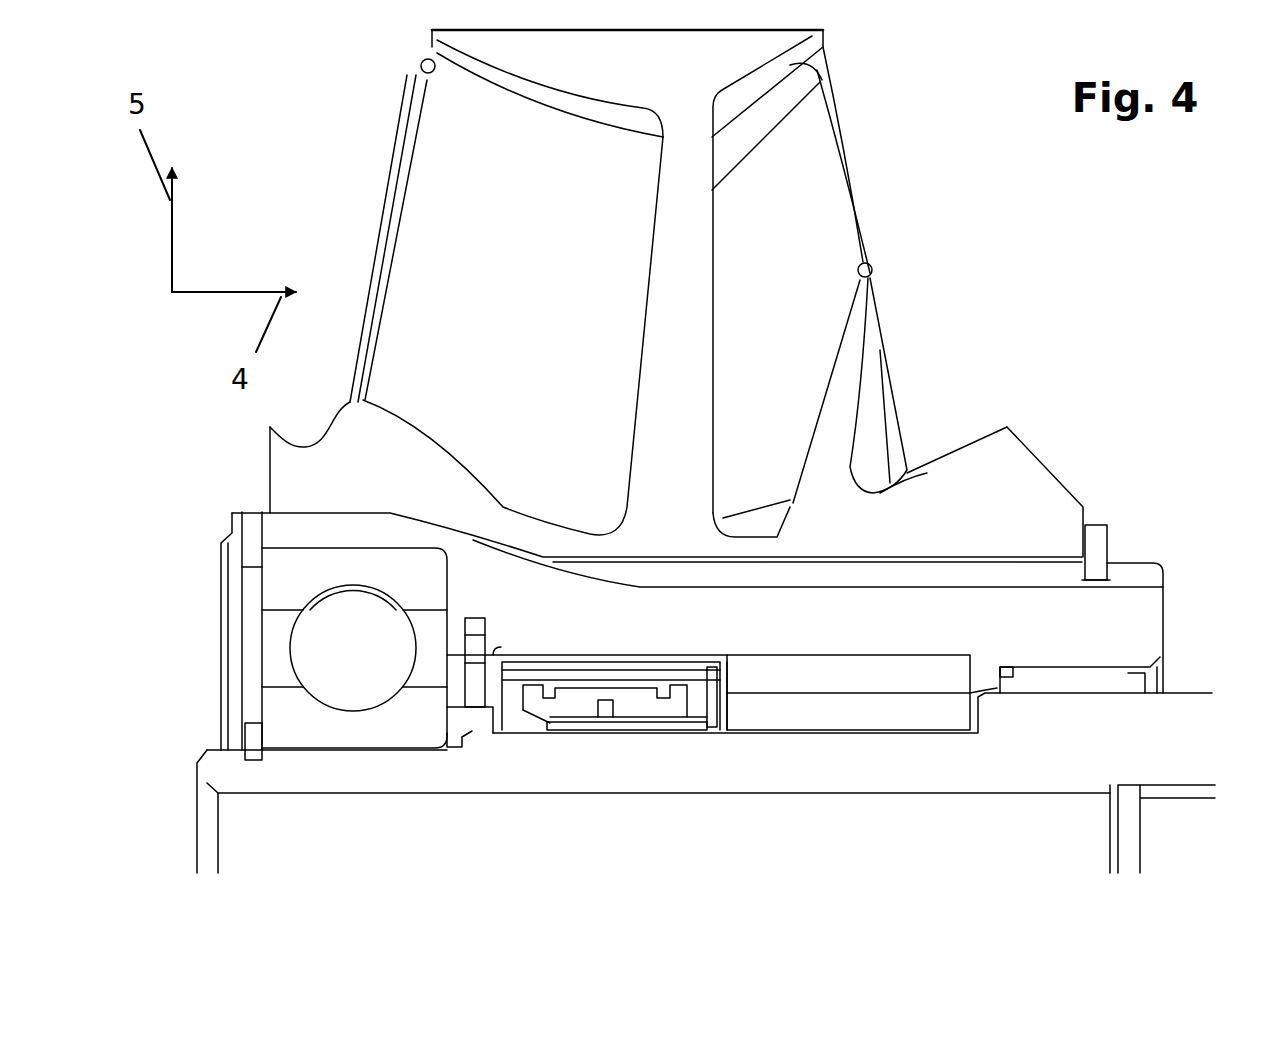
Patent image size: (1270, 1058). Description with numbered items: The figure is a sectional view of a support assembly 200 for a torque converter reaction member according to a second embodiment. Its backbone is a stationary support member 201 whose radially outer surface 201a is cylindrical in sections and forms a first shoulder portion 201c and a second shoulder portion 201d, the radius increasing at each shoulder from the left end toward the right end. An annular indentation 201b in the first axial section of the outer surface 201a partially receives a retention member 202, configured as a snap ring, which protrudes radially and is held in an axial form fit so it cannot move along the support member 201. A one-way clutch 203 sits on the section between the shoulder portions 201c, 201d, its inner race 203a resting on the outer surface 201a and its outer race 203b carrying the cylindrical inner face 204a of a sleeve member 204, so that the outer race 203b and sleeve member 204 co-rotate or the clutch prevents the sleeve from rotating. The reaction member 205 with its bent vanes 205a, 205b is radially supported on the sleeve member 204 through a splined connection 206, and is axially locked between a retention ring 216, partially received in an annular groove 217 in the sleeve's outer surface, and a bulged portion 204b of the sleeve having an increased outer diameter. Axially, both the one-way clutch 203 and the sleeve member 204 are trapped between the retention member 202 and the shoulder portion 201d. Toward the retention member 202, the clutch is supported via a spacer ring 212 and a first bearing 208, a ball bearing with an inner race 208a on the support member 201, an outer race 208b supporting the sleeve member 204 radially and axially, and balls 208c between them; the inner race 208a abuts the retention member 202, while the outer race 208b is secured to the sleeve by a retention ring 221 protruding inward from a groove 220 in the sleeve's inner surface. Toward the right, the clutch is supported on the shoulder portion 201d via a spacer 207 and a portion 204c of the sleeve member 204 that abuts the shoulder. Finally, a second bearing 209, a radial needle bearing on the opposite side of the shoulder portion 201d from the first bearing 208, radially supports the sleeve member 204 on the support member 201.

The support assembly 200 is at (1045, 312).
The support member 201 is at (847, 775).
The radially outer surface 201a is at (620, 738).
The indentation 201b is at (253, 765).
The first shoulder portion 201c is at (454, 762).
The second shoulder portion 201d is at (987, 737).
The retention member 202 is at (247, 742).
The one-way clutch 203 is at (589, 745).
The inner race 203a is at (690, 730).
The outer race 203b is at (693, 655).
The sleeve member 204 is at (822, 634).
The inner face 204a is at (548, 655).
The bulged portion 204b is at (461, 530).
The portion of the sleeve member 204c is at (978, 688).
The reaction member 205 is at (400, 170).
The bent vane 205a is at (712, 297).
The bent vane 205b is at (877, 277).
The splined connection 206 is at (736, 582).
The spacer 207 is at (770, 712).
The first bearing 208 is at (274, 637).
The inner race 208a is at (380, 740).
The outer race 208b is at (288, 580).
The balls 208c is at (386, 677).
The second bearing 209 is at (1073, 683).
The spacer ring 212 is at (484, 737).
The retention ring 216 is at (1093, 522).
The annular groove 217 is at (1090, 582).
The groove 220 is at (251, 516).
The retention ring 221 is at (246, 542).